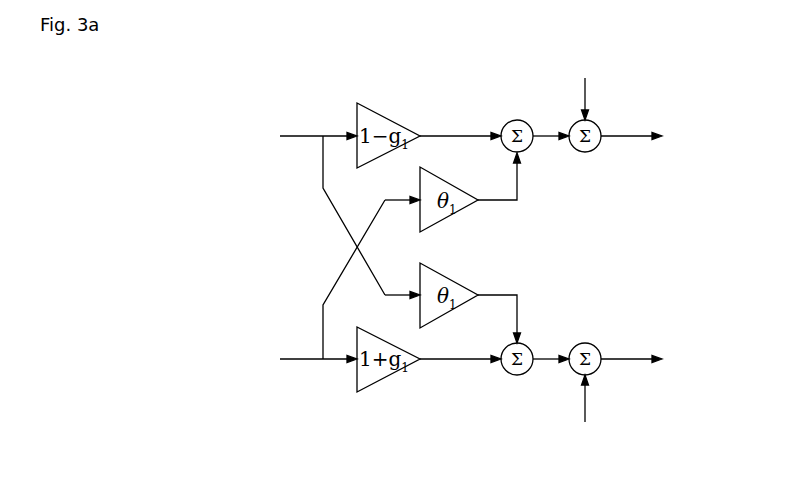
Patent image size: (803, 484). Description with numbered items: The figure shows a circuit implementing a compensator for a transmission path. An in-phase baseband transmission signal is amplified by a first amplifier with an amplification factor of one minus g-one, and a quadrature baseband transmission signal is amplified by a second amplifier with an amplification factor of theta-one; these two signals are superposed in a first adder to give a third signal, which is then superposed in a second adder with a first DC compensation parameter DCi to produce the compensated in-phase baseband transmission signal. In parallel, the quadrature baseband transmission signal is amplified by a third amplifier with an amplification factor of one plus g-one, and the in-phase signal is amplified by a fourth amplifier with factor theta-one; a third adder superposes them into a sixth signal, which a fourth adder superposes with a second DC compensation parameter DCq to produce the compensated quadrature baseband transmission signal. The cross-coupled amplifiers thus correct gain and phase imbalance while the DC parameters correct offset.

The first DC compensation parameter DCi is at (588, 87).
The second DC compensation parameter DCq is at (588, 411).